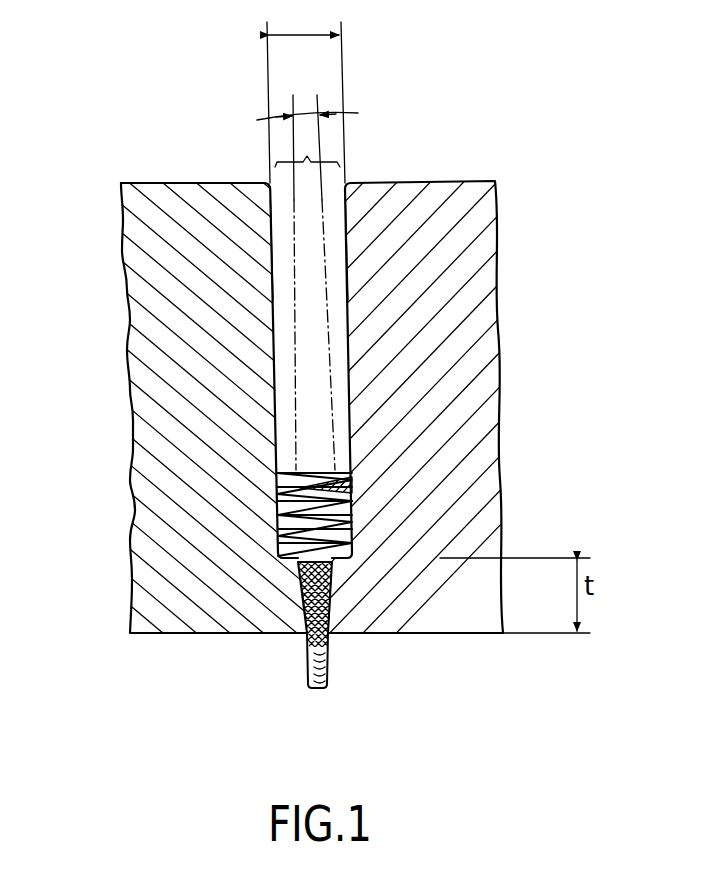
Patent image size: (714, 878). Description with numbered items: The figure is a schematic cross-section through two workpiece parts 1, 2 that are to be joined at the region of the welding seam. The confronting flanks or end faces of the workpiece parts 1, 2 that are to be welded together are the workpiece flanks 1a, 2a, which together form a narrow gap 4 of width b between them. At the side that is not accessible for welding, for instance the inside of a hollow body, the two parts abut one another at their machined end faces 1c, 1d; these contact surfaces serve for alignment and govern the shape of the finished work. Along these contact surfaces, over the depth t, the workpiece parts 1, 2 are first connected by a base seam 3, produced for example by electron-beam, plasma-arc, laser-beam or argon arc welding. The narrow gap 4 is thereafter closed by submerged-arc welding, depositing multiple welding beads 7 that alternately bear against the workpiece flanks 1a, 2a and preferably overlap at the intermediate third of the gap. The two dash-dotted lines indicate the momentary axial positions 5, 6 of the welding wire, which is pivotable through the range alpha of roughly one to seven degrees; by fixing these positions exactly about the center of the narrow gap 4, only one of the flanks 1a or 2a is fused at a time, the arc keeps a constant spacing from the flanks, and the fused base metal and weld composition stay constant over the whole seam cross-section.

The workpiece part 1 is at (218, 353).
The workpiece flank 1a is at (272, 268).
The end face 1c is at (300, 580).
The end face 1d is at (329, 626).
The workpiece part 2 is at (412, 390).
The workpiece flank 2a is at (347, 257).
The base seam 3 is at (300, 607).
The narrow gap 4 is at (311, 157).
The axial position 5 is at (298, 305).
The axial position 6 is at (330, 350).
The welding beads 7 is at (300, 485).